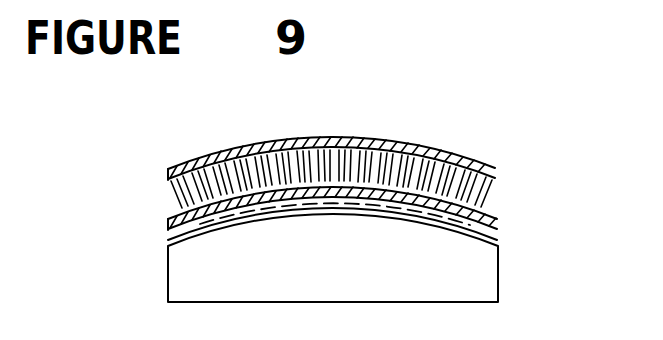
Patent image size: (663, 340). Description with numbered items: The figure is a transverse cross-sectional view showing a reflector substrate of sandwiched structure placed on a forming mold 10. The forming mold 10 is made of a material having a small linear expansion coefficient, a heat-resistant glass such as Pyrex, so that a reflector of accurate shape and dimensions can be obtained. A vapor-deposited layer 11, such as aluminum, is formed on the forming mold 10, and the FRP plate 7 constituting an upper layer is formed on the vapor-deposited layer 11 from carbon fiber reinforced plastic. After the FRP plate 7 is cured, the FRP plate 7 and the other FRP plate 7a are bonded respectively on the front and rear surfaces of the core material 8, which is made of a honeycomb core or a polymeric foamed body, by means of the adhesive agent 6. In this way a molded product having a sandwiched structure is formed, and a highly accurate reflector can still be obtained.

The adhesive agent 6 is at (496, 182).
The FRP plate 7 is at (168, 233).
The other FRP plate 7a is at (168, 170).
The core material 8 is at (497, 204).
The forming mold 10 is at (499, 292).
The vapor-deposited layer 11 is at (500, 239).